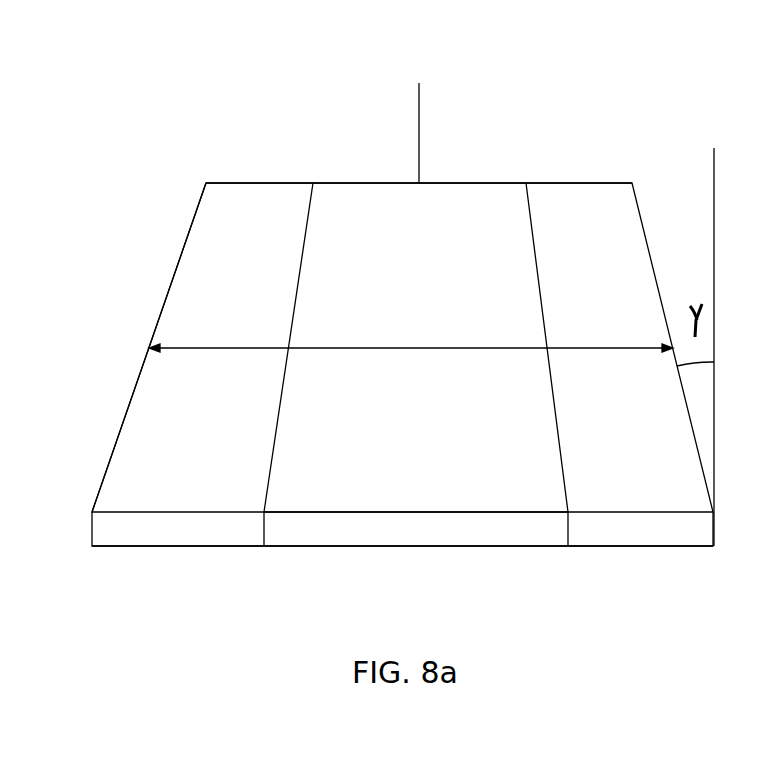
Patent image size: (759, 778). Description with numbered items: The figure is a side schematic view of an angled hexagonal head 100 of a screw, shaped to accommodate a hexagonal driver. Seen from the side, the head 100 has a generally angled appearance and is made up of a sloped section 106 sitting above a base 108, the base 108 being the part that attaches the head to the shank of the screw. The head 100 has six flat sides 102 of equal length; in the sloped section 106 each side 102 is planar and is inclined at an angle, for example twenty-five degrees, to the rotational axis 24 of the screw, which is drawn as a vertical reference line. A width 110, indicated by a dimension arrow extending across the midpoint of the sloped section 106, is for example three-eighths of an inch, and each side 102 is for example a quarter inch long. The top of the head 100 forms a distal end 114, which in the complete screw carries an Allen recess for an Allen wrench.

The angled hexagonal head 100 is at (503, 143).
The flat side 102 is at (415, 442).
The sloped section 106 is at (168, 289).
The base 108 is at (170, 532).
The width 110 is at (378, 347).
The distal end 114 is at (356, 182).
The rotational axis 24 is at (419, 118).